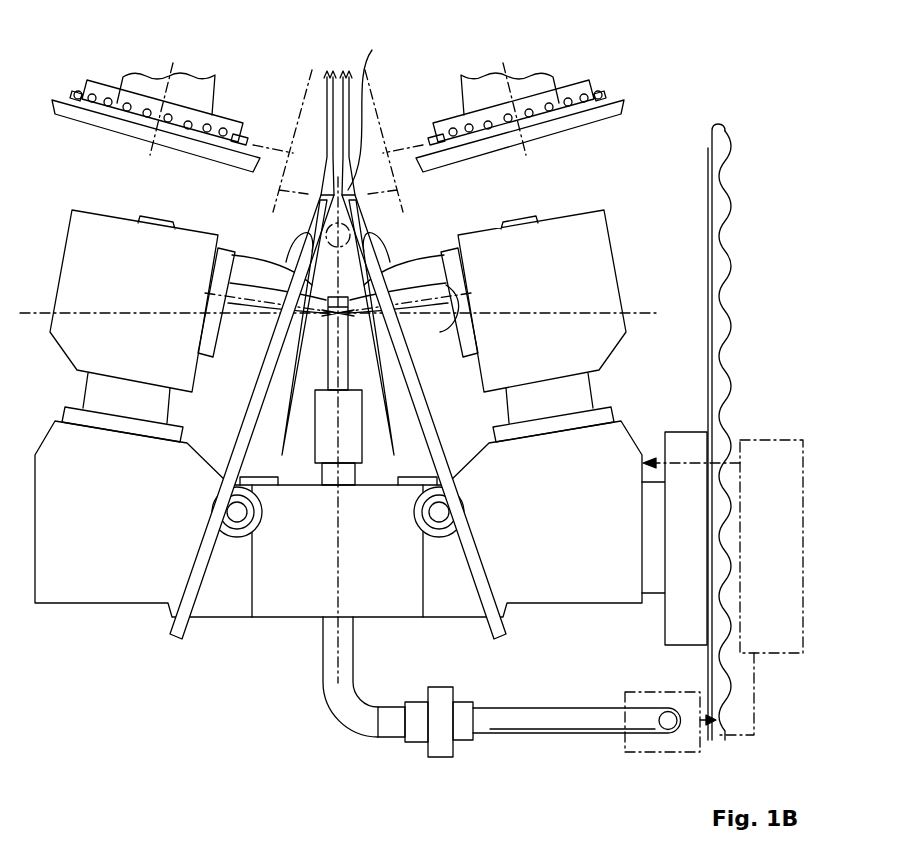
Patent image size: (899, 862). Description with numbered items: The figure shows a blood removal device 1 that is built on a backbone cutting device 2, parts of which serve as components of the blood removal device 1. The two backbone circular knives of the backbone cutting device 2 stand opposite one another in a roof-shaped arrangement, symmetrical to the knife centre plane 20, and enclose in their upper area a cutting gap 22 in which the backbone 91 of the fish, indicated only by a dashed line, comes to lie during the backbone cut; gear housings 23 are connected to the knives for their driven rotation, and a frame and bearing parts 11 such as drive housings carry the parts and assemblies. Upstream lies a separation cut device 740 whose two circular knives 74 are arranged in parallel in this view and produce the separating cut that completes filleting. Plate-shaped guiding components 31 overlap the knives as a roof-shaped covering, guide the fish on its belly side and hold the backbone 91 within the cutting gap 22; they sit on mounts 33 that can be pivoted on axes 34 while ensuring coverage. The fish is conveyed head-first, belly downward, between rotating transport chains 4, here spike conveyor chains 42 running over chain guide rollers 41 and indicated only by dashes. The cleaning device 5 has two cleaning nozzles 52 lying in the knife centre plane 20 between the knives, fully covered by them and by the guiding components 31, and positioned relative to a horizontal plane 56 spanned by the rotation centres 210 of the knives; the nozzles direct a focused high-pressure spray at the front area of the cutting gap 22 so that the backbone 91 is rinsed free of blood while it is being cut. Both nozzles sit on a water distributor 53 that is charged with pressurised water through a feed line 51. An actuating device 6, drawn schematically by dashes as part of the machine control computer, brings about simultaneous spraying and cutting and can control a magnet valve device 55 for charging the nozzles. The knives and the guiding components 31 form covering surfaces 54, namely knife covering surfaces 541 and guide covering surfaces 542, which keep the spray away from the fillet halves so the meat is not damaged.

The blood removal device 1 is at (182, 200).
The backbone cutting device 2 is at (546, 175).
The transport chains 4 is at (377, 82).
The chain guide rollers 41 is at (95, 80).
The spike conveyor chains 42 is at (300, 72).
The separation cut device 740 is at (319, 64).
The circular knives for the separating cut 74 is at (338, 106).
The cutting gap 22 is at (368, 106).
The backbone 91 is at (380, 221).
The guiding components 31 is at (304, 224).
The gear housings 23 is at (62, 247).
The covering surfaces 54 is at (232, 255).
The knife covering surfaces 541 is at (232, 285).
The guide covering surfaces 542 is at (446, 255).
The horizontal plane 56 is at (655, 318).
The cleaning device 5 is at (287, 334).
The rotation centres 210 is at (440, 332).
The cleaning nozzles 52 is at (300, 335).
The mounts 33 is at (238, 428).
The water distributor 53 is at (315, 432).
The axes 34 is at (264, 522).
The frame and/or bearing parts 11 is at (82, 593).
The knife centre plane 20 is at (337, 650).
The feed line 51 is at (552, 710).
The magnet valve device 55 is at (652, 690).
The actuating device 6 is at (787, 440).